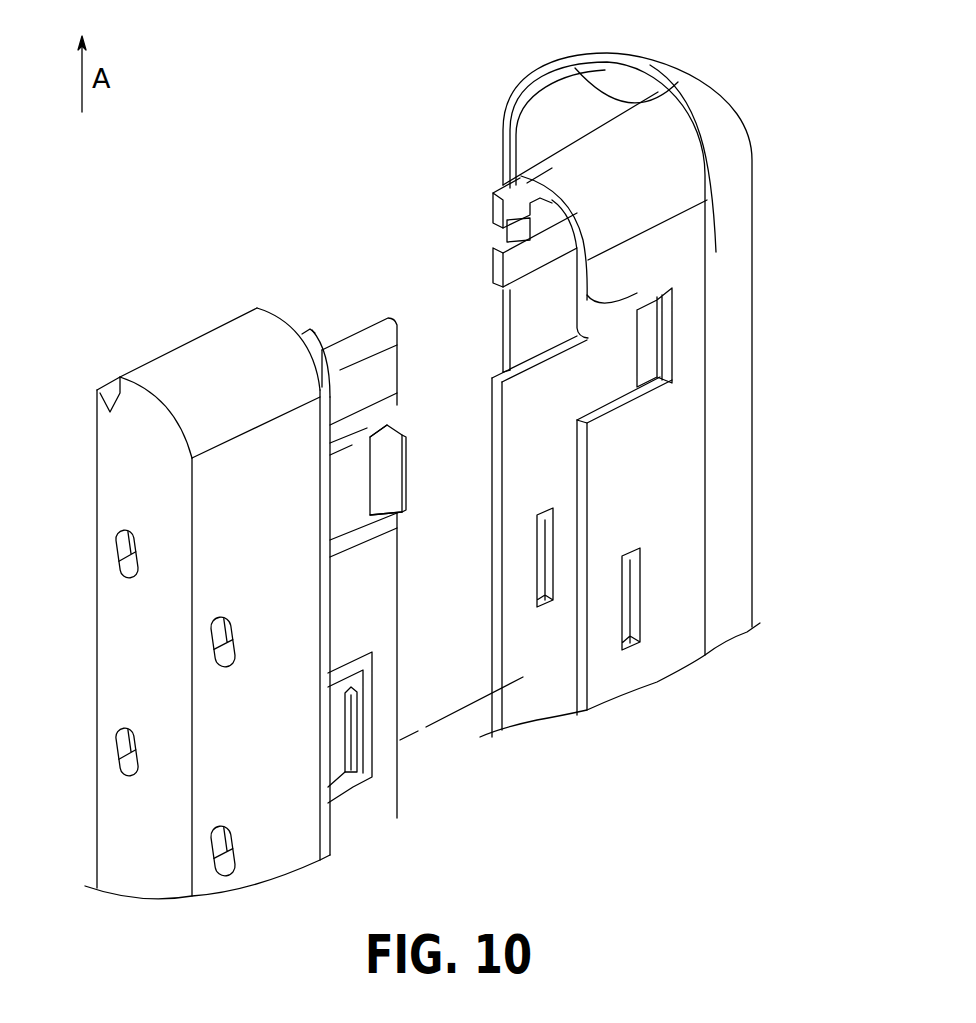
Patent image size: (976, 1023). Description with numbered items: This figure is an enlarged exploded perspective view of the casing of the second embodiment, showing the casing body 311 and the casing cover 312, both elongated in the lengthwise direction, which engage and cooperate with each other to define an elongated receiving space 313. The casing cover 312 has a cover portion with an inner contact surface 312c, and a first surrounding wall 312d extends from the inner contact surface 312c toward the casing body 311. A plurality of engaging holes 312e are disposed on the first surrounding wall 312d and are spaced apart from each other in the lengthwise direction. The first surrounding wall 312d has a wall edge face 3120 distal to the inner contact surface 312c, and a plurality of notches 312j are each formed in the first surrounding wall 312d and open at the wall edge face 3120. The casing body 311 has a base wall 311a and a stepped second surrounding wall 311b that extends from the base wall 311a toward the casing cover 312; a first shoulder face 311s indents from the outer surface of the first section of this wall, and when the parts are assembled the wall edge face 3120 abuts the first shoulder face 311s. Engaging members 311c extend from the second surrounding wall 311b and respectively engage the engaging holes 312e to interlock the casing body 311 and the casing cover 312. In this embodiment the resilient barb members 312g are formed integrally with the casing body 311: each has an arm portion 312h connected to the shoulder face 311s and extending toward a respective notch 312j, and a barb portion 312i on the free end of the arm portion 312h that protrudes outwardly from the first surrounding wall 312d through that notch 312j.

The casing body 311 is at (148, 357).
The base wall 311a is at (125, 421).
The second surrounding wall 311b is at (228, 355).
The first shoulder face 311s is at (322, 417).
The engaging member 311c is at (358, 752).
The casing cover 312 is at (693, 68).
The inner contact surface 312c is at (590, 85).
The first surrounding wall 312d is at (615, 150).
The engaging hole 312e is at (622, 603).
The resilient barb member 312g is at (408, 487).
The arm portion 312h is at (355, 463).
The barb portion 312i is at (407, 502).
The notch 312j is at (632, 356).
The wall edge face 3120 is at (583, 337).
The receiving space 313 is at (548, 230).